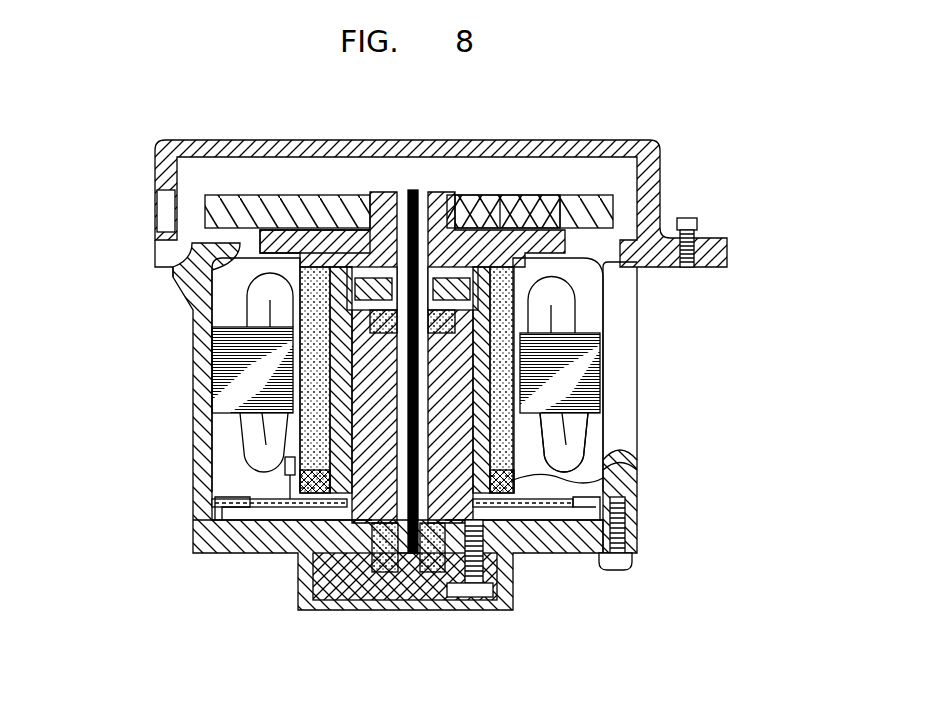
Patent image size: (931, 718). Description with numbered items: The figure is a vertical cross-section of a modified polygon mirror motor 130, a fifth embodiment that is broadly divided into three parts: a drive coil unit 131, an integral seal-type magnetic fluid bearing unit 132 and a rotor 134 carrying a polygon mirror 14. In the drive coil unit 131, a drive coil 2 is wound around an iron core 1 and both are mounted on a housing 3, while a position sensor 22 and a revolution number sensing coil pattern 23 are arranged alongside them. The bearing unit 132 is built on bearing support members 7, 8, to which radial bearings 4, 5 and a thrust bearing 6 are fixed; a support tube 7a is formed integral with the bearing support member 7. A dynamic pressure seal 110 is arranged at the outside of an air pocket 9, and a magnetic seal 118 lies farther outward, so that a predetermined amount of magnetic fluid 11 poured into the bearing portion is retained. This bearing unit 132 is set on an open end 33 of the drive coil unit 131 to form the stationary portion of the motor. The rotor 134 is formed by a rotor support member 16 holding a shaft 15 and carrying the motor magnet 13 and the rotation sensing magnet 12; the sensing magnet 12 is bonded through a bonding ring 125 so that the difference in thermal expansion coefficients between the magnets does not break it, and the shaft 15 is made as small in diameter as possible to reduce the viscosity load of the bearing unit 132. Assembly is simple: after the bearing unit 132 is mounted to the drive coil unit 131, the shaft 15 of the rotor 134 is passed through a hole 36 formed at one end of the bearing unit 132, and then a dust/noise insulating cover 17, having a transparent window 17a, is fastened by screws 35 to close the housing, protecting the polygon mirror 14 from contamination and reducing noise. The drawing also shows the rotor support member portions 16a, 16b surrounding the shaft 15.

The polygon mirror motor 130 is at (575, 95).
The drive coil unit 131 is at (183, 470).
The dust/noise insulating cover 17 is at (436, 158).
The transparent window 17a is at (157, 213).
The air pocket 9 is at (580, 250).
The screw 35 is at (688, 218).
The polygon mirror 14 is at (242, 210).
The magnetic fluid 11 is at (596, 225).
The hole 36 is at (445, 205).
The dynamic pressure seal 110 is at (530, 215).
The magnetic seal 118 is at (500, 225).
The radial bearing 4 is at (340, 270).
The hub flange 16b is at (263, 237).
The rotor support member 16 is at (440, 240).
The shaft 15 is at (410, 190).
The stator core 16a is at (335, 290).
The bearing support member 7 is at (282, 535).
The bearing support member 8 is at (352, 590).
The thrust bearing 6 is at (427, 556).
The radial bearing 5 is at (458, 598).
The rotation sensing magnet 12 is at (640, 488).
The bonding ring 125 is at (615, 468).
The rotor 134 is at (724, 311).
The drive coil 2 is at (250, 312).
The iron core 1 is at (228, 378).
The support tube 7a is at (257, 445).
The integral seal-type magnetic fluid bearing unit 132 is at (508, 368).
The motor magnet 13 is at (556, 445).
The housing 3 is at (262, 488).
The open end 33 is at (230, 503).
The position sensor 22 is at (225, 518).
The revolution number sensing coil pattern 23 is at (250, 515).